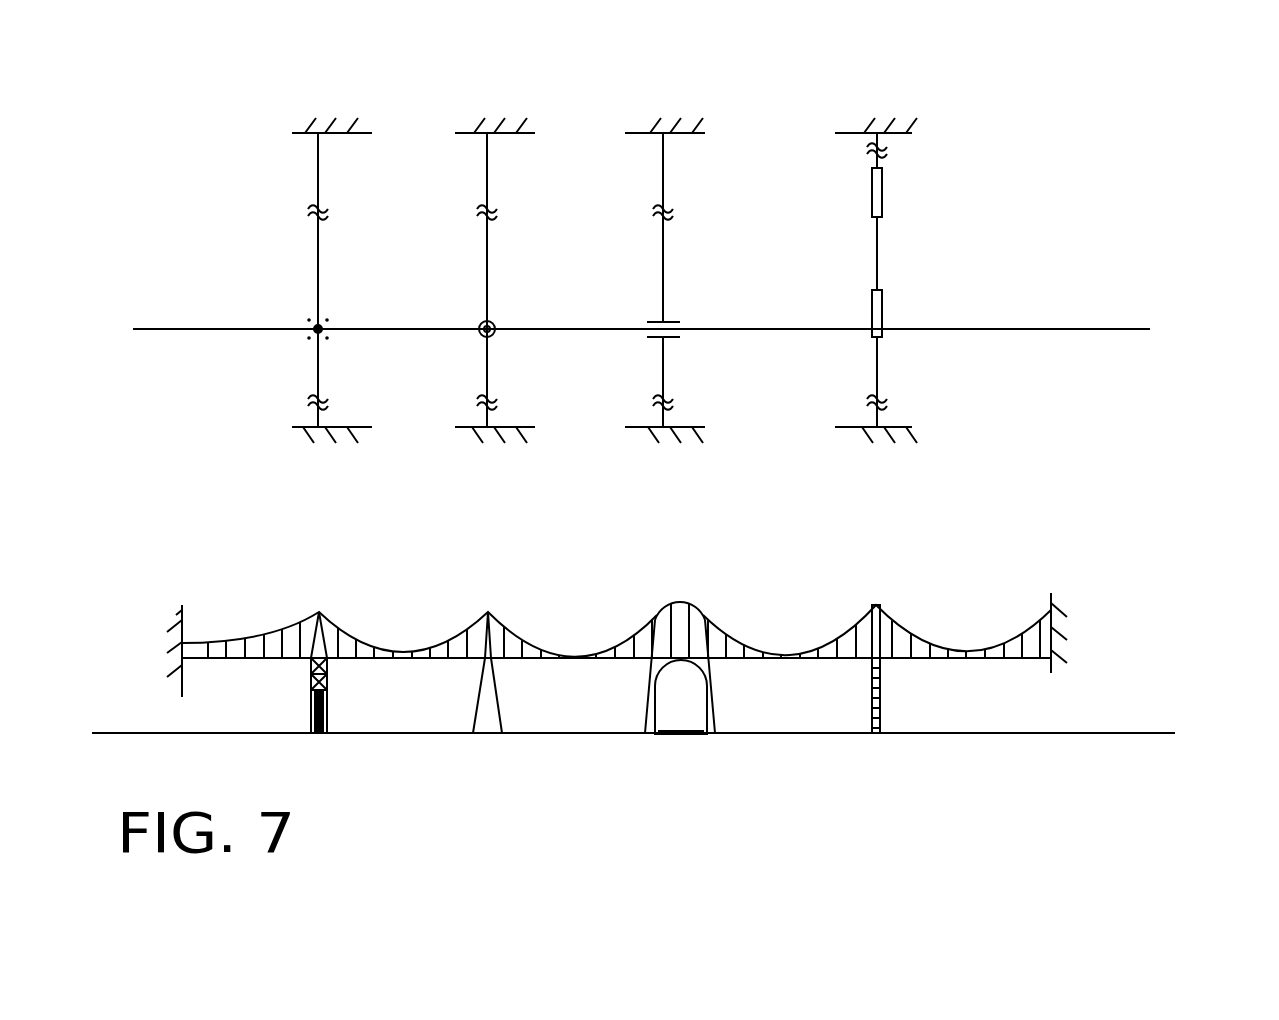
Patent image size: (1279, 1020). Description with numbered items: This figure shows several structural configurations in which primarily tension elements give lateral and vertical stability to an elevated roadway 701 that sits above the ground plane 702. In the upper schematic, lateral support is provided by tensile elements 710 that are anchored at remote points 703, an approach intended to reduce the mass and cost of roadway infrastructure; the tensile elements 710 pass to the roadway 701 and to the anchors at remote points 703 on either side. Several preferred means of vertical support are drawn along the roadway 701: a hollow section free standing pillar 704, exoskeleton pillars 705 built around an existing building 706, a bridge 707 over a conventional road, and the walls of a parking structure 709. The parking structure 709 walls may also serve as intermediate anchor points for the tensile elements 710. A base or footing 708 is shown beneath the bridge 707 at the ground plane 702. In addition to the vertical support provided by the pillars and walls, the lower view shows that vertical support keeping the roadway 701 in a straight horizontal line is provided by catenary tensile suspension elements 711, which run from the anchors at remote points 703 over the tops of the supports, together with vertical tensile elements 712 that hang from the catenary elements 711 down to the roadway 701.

The roadway 701 is at (1040, 327).
The ground plane 702 is at (1168, 735).
The remote points 703 is at (357, 138).
The hollow section free standing pillar 704 is at (492, 337).
The exoskeleton pillars 705 is at (312, 316).
The existing building 706 is at (322, 335).
The bridge 707 is at (676, 340).
The tower footing 708 is at (685, 737).
The parking structure 709 is at (884, 195).
The tensile elements 710 is at (320, 250).
The catenary tensile suspension elements 711 is at (288, 622).
The vertical tensile elements 712 is at (207, 645).